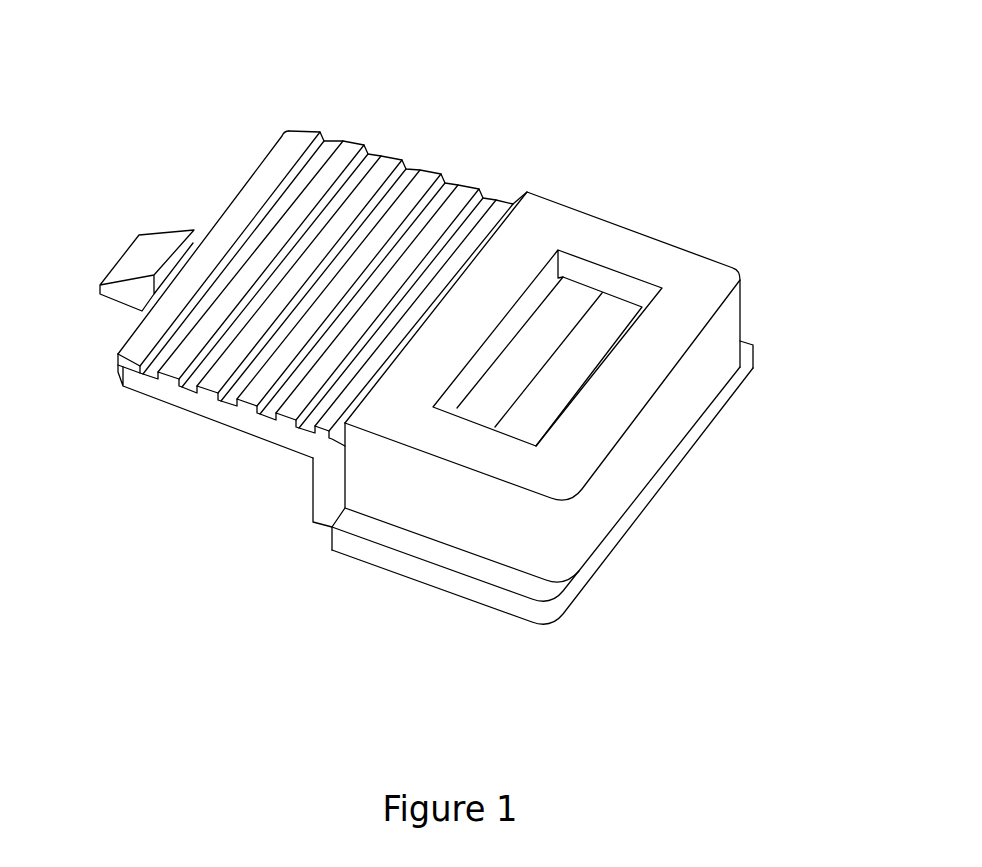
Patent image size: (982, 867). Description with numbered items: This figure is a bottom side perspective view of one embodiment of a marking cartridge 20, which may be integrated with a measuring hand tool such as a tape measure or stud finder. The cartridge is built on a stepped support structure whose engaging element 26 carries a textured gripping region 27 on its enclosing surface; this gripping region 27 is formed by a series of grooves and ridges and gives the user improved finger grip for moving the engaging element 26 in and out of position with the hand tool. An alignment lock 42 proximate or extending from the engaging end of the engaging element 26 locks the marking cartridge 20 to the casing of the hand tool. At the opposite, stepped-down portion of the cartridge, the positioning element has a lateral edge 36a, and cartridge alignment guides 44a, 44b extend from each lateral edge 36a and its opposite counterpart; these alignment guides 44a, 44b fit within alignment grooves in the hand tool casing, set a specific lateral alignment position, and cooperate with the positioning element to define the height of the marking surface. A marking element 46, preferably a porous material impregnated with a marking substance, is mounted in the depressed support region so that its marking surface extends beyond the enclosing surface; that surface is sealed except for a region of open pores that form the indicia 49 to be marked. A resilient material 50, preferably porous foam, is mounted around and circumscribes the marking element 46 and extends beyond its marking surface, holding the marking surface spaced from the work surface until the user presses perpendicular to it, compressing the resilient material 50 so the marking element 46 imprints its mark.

The marking cartridge 20 is at (466, 356).
The engaging element 26 is at (203, 408).
The textured gripping region 27 is at (516, 199).
The lateral edge 36a is at (362, 550).
The alignment lock 42 is at (157, 255).
The cartridge alignment guide 44a is at (477, 563).
The cartridge alignment guide 44b is at (748, 343).
The marking element 46 is at (617, 311).
The indicia 49 is at (583, 316).
The resilient material 50 is at (710, 284).